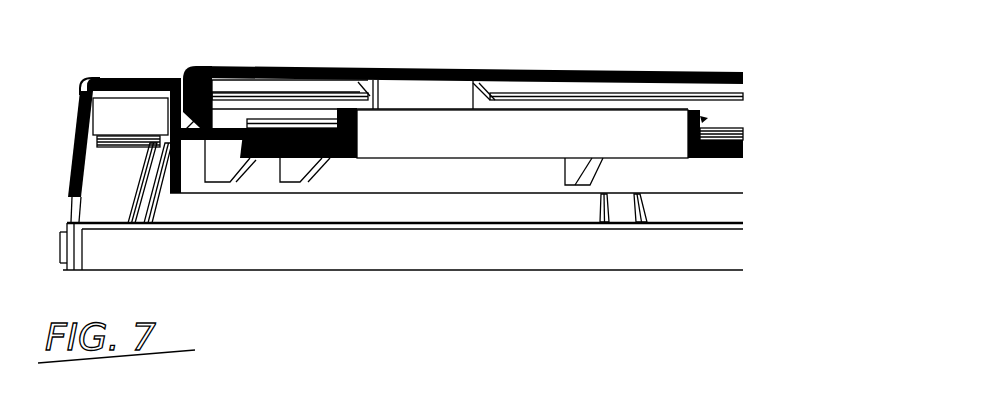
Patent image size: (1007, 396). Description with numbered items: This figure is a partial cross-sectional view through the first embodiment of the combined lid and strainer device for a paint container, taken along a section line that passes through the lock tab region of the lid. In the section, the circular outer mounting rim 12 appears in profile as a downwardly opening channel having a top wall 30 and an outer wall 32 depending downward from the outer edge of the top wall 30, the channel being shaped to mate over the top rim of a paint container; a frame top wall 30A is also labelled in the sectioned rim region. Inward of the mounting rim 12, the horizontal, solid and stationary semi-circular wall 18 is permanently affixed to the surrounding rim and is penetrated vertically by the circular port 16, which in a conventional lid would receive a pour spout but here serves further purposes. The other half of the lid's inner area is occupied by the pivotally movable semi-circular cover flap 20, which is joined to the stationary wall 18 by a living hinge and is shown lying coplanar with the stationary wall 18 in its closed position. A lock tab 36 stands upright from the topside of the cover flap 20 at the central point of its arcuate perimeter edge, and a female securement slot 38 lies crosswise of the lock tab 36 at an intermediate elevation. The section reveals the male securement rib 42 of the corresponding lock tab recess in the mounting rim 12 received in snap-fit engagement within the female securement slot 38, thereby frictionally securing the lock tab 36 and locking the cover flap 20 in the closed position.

The mounting rim 12 is at (82, 94).
The port 16 is at (553, 137).
The stationary semi-circular wall 18 is at (297, 122).
The cover flap 20 is at (440, 70).
The top wall 30 is at (132, 78).
The frame top wall 30A is at (108, 80).
The outer wall 32 is at (78, 117).
The lock tab 36 is at (214, 99).
The female securement slot 38 is at (128, 128).
The male securement rib 42 is at (165, 146).